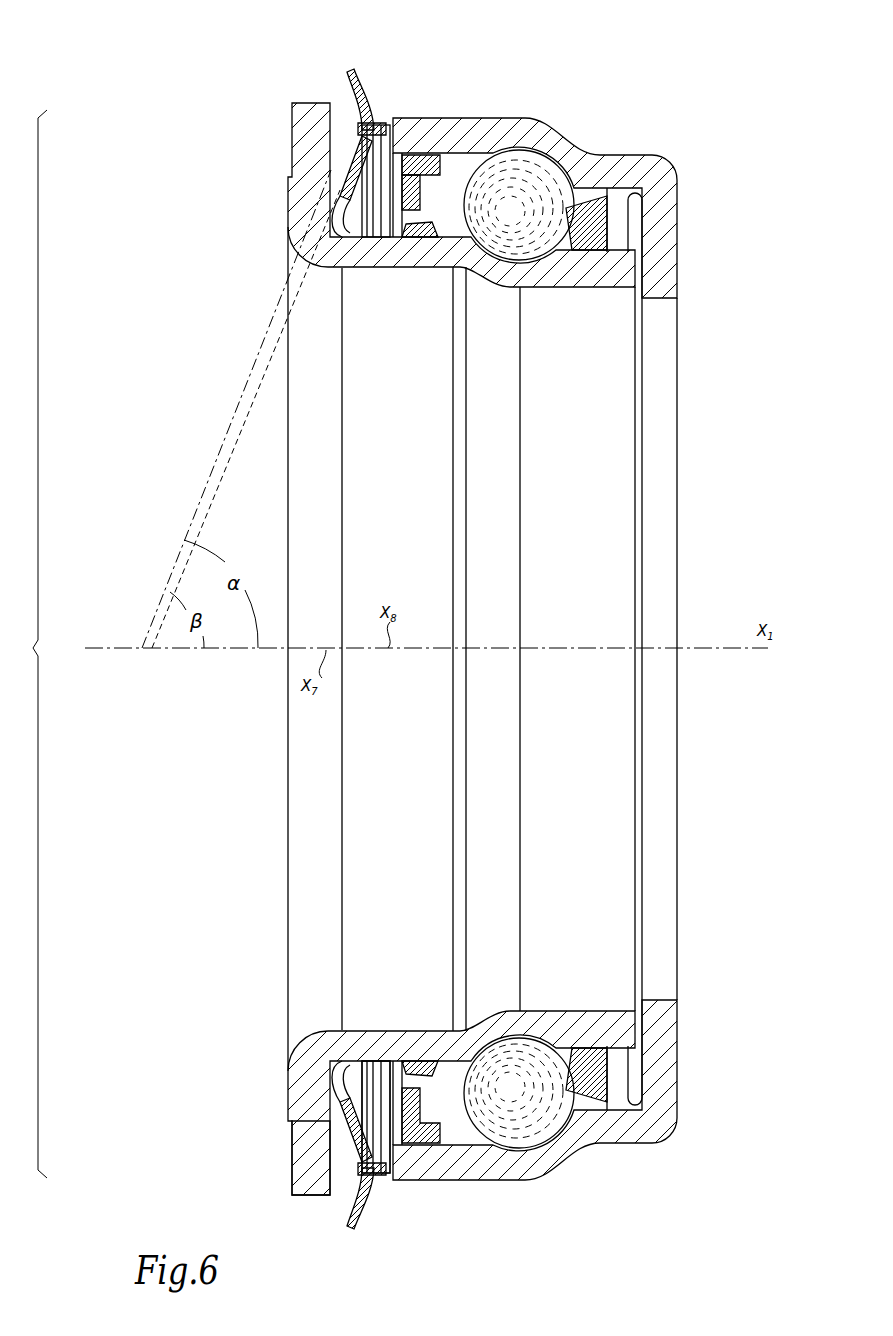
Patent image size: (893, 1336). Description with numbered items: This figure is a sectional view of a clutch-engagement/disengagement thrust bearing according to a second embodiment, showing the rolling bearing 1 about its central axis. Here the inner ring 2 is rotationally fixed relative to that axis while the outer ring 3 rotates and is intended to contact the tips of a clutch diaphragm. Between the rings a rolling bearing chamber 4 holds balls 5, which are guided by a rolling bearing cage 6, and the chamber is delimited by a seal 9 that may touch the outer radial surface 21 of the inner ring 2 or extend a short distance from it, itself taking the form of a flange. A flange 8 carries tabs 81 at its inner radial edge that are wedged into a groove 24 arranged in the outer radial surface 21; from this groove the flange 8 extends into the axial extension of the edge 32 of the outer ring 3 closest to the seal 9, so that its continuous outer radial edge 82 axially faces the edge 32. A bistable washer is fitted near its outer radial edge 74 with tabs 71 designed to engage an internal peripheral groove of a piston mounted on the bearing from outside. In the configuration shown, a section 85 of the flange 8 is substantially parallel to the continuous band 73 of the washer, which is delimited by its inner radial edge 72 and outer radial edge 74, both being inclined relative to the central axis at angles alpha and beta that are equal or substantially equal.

The rolling bearing 1 is at (26, 644).
The inner ring 2 is at (290, 205).
The outer ring 3 is at (655, 222).
The rolling bearing chamber 4 is at (461, 191).
The balls 5 is at (522, 205).
The rolling bearing cage 6 is at (548, 1086).
The flange 8 is at (330, 1128).
The seal 9 is at (418, 1148).
The outer radial surface 21 is at (478, 1148).
The groove 24 is at (335, 1068).
The edge 32 is at (345, 1150).
The tabs 71 is at (350, 1222).
The inner radial edge 72 is at (335, 200).
The continuous band 73 is at (345, 150).
The outer radial edge 74 is at (358, 1228).
The tabs 81 is at (342, 1064).
The continuous outer radial edge 82 is at (378, 122).
The section 85 is at (418, 140).